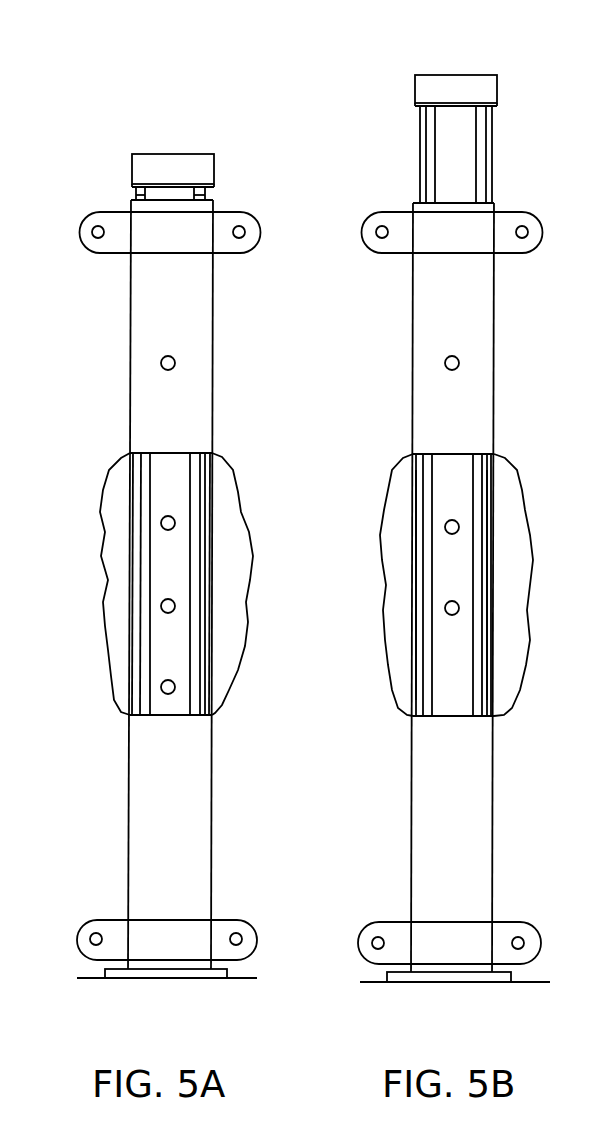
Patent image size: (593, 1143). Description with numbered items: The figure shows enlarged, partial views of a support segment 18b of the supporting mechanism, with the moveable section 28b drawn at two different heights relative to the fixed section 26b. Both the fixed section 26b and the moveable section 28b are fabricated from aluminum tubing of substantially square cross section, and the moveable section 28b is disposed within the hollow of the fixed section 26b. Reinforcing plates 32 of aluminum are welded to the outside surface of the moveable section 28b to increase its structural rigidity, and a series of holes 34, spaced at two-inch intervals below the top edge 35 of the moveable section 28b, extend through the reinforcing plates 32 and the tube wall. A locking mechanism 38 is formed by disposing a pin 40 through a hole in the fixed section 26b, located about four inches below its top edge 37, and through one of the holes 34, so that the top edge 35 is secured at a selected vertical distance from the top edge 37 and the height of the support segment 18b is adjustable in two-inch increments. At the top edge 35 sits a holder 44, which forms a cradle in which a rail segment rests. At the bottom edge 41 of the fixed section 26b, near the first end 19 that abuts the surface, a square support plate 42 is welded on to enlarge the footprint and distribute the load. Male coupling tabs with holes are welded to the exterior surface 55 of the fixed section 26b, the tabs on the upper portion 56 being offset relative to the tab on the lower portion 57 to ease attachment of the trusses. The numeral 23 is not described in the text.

In FIG. 5A, the support segment 18b is at (126, 612).
In FIG. 5B, the support segment 18b is at (408, 626).
In FIG. 5A, the first end 19 is at (97, 898).
In FIG. 5B, the first end 19 is at (380, 860).
In FIG. 5A, the upper portion of post 23 is at (100, 184).
In FIG. 5B, the upper portion of post 23 is at (402, 84).
In FIG. 5A, the fixed section 26b is at (152, 420).
In FIG. 5B, the fixed section 26b is at (430, 421).
In FIG. 5A, the moveable section 28b is at (194, 197).
In FIG. 5B, the moveable section 28b is at (462, 163).
In FIG. 5B, the reinforcing plates 32 is at (417, 687).
In FIG. 5A, the holes 34 is at (173, 528).
In FIG. 5B, the top edge 35 is at (504, 108).
In FIG. 5B, the top edge 37 is at (500, 199).
In FIG. 5A, the locking mechanism 38 is at (118, 358).
In FIG. 5B, the locking mechanism 38 is at (394, 350).
In FIG. 5A, the pin 40 is at (176, 366).
In FIG. 5B, the pin 40 is at (459, 367).
In FIG. 5A, the bottom edge 41 is at (176, 966).
In FIG. 5A, the support plate 42 is at (122, 978).
In FIG. 5A, the holder 44 is at (162, 169).
In FIG. 5B, the holder 44 is at (470, 82).
In FIG. 5B, the exterior surface 55 is at (505, 284).
In FIG. 5A, the upper portion 56 is at (78, 258).
In FIG. 5A, the lower portion 57 is at (95, 840).